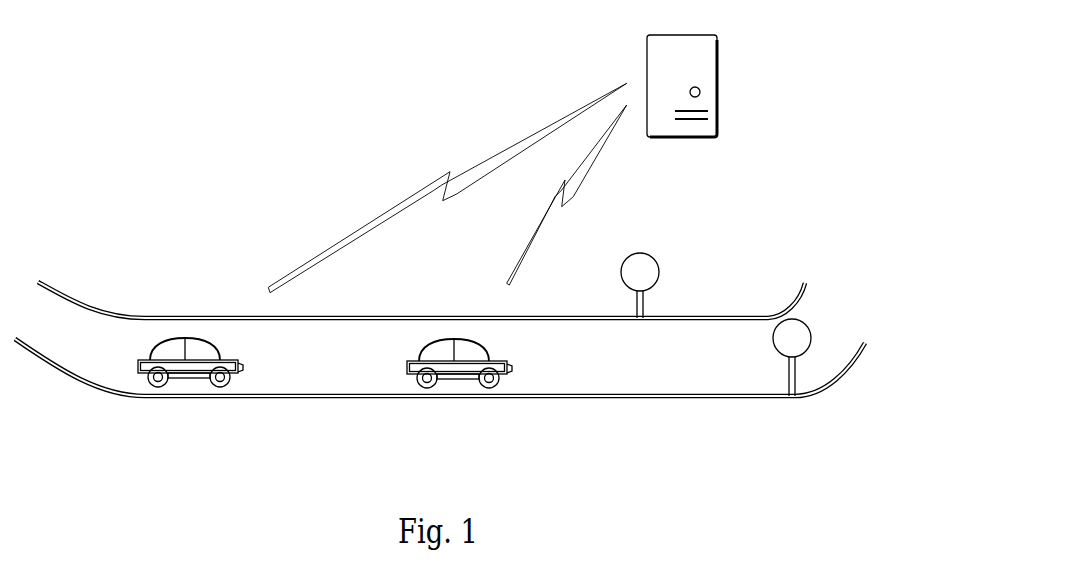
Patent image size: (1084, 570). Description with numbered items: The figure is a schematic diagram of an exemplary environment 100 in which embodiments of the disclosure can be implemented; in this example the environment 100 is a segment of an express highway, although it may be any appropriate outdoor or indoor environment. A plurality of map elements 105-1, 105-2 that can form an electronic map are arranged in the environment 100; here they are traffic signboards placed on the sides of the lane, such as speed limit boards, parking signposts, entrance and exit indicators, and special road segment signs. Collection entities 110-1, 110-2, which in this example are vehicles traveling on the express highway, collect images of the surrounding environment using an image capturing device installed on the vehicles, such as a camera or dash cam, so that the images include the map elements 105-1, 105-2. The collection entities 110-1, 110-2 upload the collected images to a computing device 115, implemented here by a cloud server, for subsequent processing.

The environment 100 is at (301, 45).
The map element 105-1 is at (651, 257).
The map element 105-2 is at (800, 322).
The collection entity 110-1 is at (486, 353).
The collection entity 110-2 is at (217, 353).
The computing device 115 is at (685, 35).